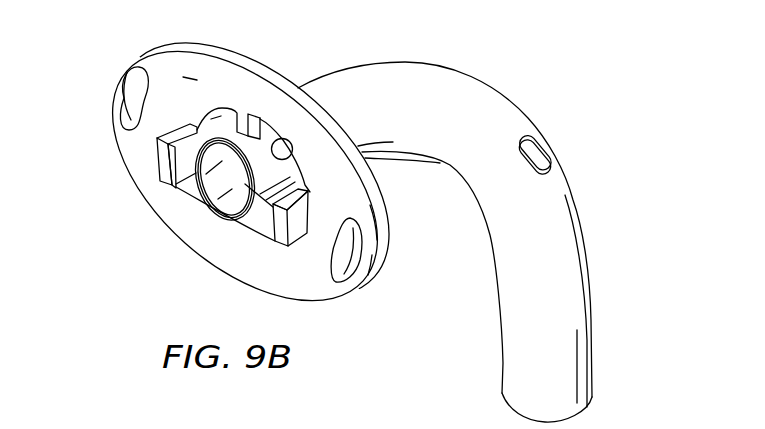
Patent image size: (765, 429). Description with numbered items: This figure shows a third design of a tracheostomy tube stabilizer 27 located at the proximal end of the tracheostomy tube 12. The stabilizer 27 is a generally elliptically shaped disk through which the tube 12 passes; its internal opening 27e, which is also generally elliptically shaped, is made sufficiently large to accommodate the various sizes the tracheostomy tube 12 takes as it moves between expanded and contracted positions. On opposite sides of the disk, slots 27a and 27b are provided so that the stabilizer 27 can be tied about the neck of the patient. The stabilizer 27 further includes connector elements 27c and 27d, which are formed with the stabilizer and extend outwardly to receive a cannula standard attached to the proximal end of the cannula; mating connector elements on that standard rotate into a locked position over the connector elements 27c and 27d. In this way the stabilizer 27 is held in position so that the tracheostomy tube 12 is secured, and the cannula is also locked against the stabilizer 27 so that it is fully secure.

The tracheostomy tube 12 is at (436, 65).
The tracheostomy tube stabilizer 27 is at (178, 237).
The slot 27a is at (128, 107).
The slot 27b is at (345, 266).
The connector element 27c is at (163, 162).
The connector element 27d is at (275, 244).
The internal opening 27e is at (288, 163).